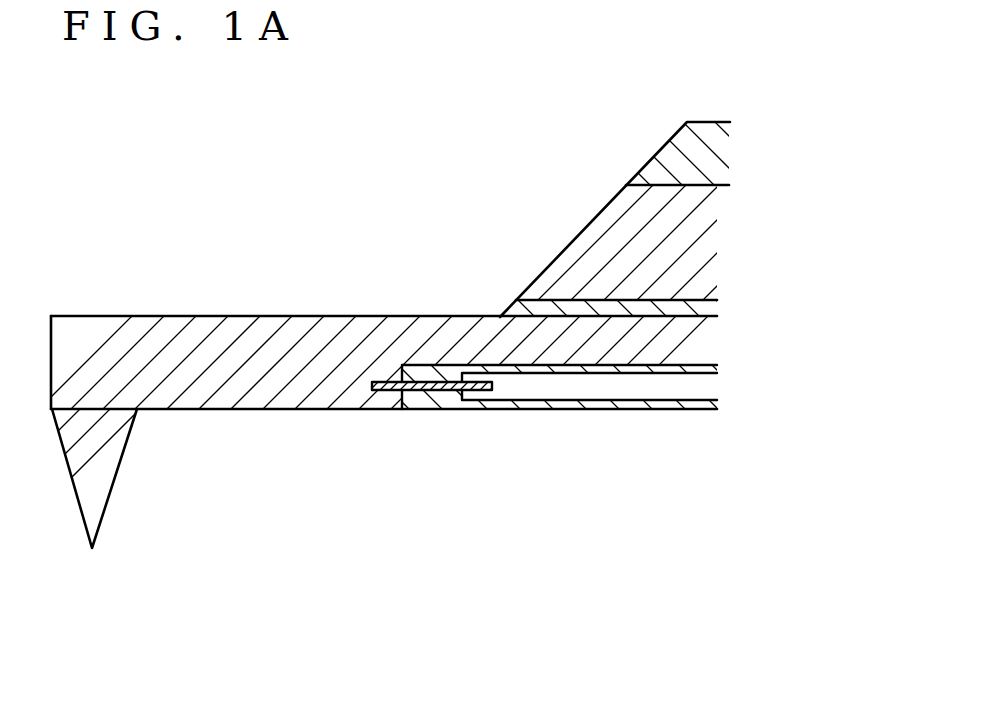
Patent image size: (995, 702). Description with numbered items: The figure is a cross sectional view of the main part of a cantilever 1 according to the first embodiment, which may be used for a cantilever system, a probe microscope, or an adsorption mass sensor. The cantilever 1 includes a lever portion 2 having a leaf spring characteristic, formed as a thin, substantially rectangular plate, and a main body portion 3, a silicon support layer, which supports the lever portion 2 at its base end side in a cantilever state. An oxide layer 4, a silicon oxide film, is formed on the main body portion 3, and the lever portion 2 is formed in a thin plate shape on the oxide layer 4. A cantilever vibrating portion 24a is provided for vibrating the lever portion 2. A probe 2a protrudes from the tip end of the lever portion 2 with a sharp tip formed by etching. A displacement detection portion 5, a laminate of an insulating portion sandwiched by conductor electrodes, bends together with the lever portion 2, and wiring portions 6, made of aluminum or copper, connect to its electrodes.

The cantilever 1 is at (390, 200).
The lever portion 2 is at (170, 316).
The probe 2a is at (79, 505).
The main body portion 3 is at (609, 203).
The cantilever vibrating portion 24a is at (669, 140).
The oxide layer 4 is at (700, 299).
The displacement detection portion 5 is at (427, 390).
The wiring portions 6 is at (450, 406).